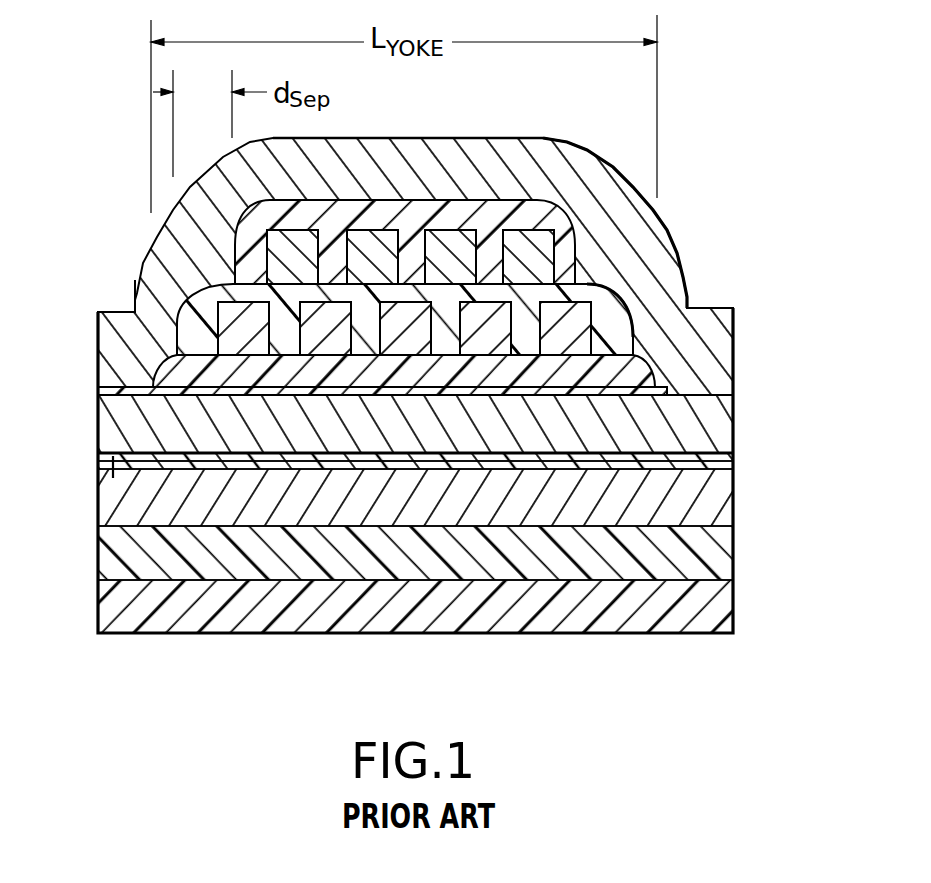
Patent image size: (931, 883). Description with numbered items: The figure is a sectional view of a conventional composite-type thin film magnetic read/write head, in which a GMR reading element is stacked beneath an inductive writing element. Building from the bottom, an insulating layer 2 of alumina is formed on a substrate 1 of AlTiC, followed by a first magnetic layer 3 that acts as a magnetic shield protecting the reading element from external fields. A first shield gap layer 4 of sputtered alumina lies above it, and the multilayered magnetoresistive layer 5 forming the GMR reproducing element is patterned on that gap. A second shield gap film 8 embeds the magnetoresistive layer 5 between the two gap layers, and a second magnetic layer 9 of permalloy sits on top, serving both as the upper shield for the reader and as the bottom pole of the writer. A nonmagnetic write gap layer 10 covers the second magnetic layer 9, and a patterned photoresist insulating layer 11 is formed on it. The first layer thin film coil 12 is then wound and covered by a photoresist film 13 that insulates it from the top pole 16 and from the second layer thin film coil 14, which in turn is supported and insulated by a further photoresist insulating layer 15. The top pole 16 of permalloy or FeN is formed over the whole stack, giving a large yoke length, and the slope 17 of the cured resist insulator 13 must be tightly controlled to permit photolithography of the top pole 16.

The substrate 1 is at (723, 631).
The insulating layer 2 is at (700, 558).
The first magnetic layer 3 is at (700, 512).
The first shield gap layer 4 is at (707, 463).
The magnetoresistive layer 5 is at (113, 478).
The second shield gap film 8 is at (123, 447).
The second magnetic layer 9 is at (700, 426).
The write gap layer 10 is at (98, 354).
The insulating layer 11 is at (643, 369).
The first layer thin film coil 12 is at (413, 307).
The photoresist film 13 is at (618, 312).
The second layer thin film coil 14 is at (303, 240).
The insulating layer 15 is at (533, 213).
The top pole 16 is at (353, 143).
The slope 17 is at (191, 308).